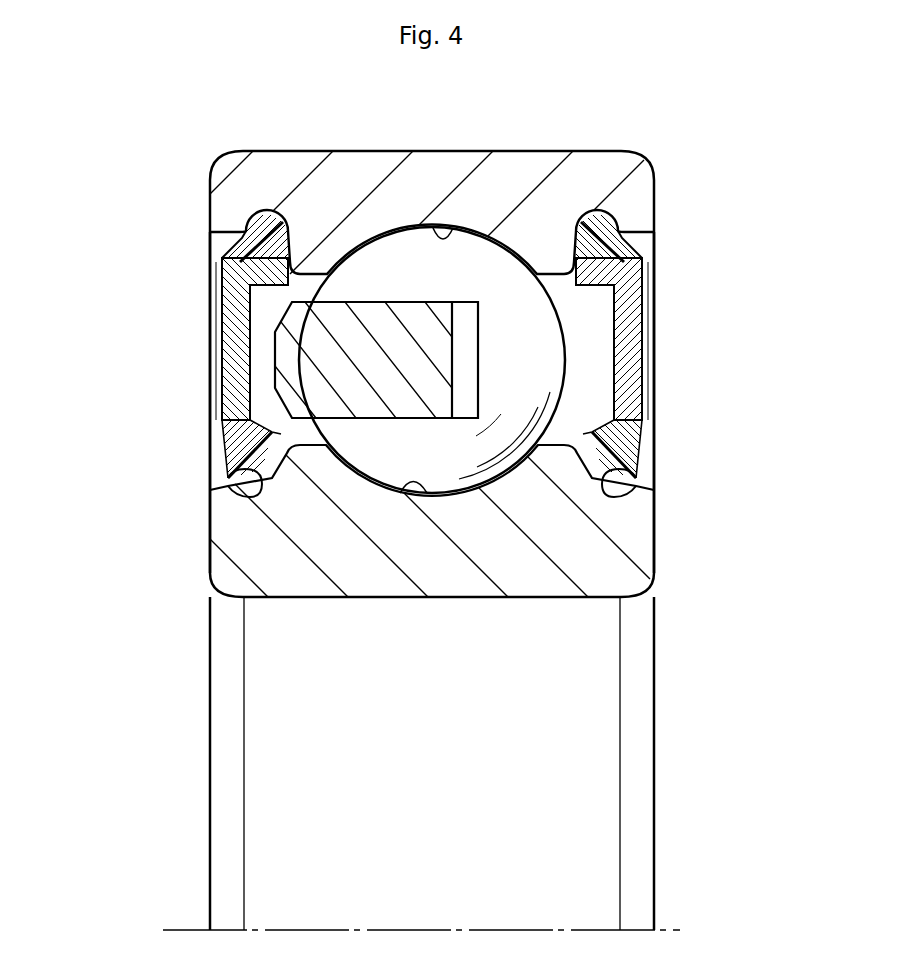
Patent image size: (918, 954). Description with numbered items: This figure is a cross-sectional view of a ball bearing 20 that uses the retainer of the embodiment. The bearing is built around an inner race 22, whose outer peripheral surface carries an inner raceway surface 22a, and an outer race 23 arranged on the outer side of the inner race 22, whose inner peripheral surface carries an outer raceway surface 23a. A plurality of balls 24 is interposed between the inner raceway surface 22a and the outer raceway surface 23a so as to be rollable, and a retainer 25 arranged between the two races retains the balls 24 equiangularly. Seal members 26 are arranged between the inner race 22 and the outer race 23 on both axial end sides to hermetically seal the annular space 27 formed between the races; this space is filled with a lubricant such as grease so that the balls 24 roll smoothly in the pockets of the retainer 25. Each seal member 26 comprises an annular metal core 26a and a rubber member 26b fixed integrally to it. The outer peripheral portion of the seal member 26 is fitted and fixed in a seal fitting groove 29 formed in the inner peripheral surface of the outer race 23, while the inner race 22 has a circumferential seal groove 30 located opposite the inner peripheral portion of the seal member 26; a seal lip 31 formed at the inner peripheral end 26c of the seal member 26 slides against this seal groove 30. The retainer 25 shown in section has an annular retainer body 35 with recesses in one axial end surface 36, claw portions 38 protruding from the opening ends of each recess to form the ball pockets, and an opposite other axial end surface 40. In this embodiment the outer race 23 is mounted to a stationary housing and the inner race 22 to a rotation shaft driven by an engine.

The ball bearing 20 is at (650, 142).
The inner race 22 is at (486, 597).
The inner raceway surface 22a is at (406, 492).
The outer race 23 is at (386, 153).
The outer raceway surface 23a is at (445, 232).
The ball 24 is at (521, 253).
The retainer 25 is at (361, 419).
The seal member 26 is at (222, 399).
The metal core 26a is at (226, 347).
The rubber member 26b is at (236, 260).
The inner peripheral end 26c is at (228, 448).
The annular space 27 is at (236, 300).
The seal fitting groove 29 is at (247, 222).
The seal groove 30 is at (240, 488).
The seal lip 31 is at (283, 470).
The retainer body 35 is at (338, 305).
The one axial end surface 36 is at (456, 342).
The claw portion 38 is at (473, 367).
The other axial end surface 40 is at (224, 380).